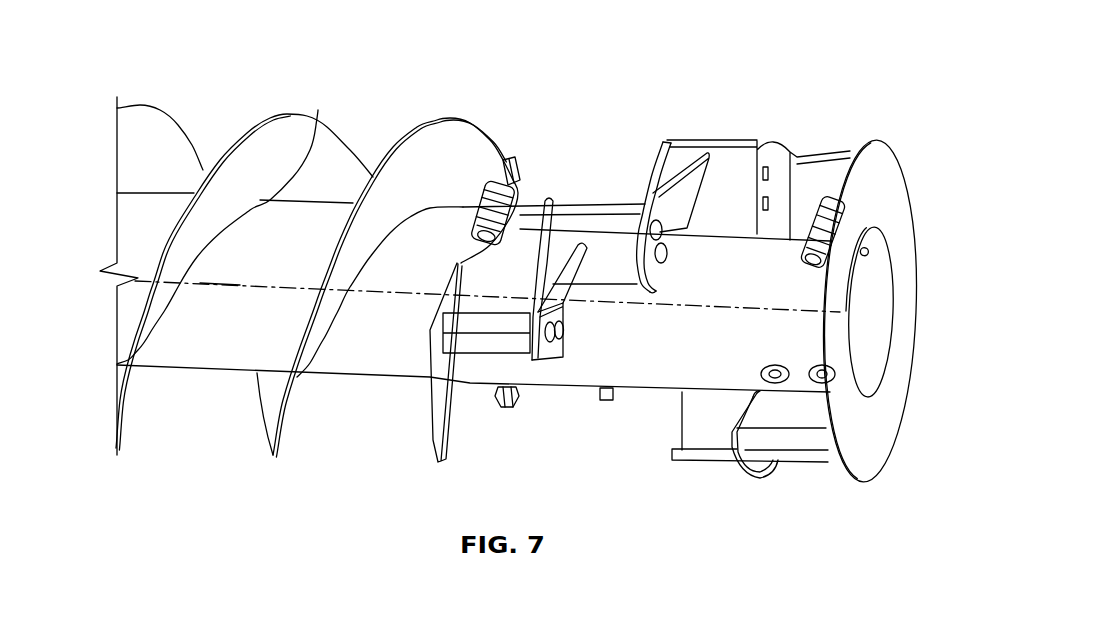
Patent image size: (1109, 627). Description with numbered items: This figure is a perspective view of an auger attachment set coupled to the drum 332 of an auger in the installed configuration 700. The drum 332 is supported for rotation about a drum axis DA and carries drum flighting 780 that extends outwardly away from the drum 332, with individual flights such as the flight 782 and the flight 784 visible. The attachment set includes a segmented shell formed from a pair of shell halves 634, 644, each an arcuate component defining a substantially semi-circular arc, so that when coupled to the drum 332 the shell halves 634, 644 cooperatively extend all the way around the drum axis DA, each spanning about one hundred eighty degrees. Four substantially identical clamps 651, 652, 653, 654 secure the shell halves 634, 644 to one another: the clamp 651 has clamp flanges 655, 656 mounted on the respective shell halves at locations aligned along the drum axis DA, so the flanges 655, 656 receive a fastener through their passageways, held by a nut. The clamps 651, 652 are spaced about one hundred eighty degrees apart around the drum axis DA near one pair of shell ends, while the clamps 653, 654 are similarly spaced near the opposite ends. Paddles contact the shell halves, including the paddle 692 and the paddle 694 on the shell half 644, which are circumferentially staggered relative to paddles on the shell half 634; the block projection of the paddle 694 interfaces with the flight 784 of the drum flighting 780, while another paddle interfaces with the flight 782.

The installed configuration 700 is at (862, 46).
The drum flighting 780 is at (141, 123).
The drum 332 is at (316, 125).
The flight 782 is at (322, 148).
The flight 784 is at (345, 253).
The clamp flange 655 is at (490, 187).
The clamp 651 is at (507, 176).
The clamp flange 656 is at (520, 201).
The shell half 644 is at (774, 153).
The clamp 653 is at (818, 203).
The clamp 652 is at (503, 392).
The paddle 692 is at (566, 336).
The shell half 634 is at (607, 393).
The paddle 694 is at (655, 391).
The clamp 654 is at (820, 402).
The drum axis DA is at (217, 283).